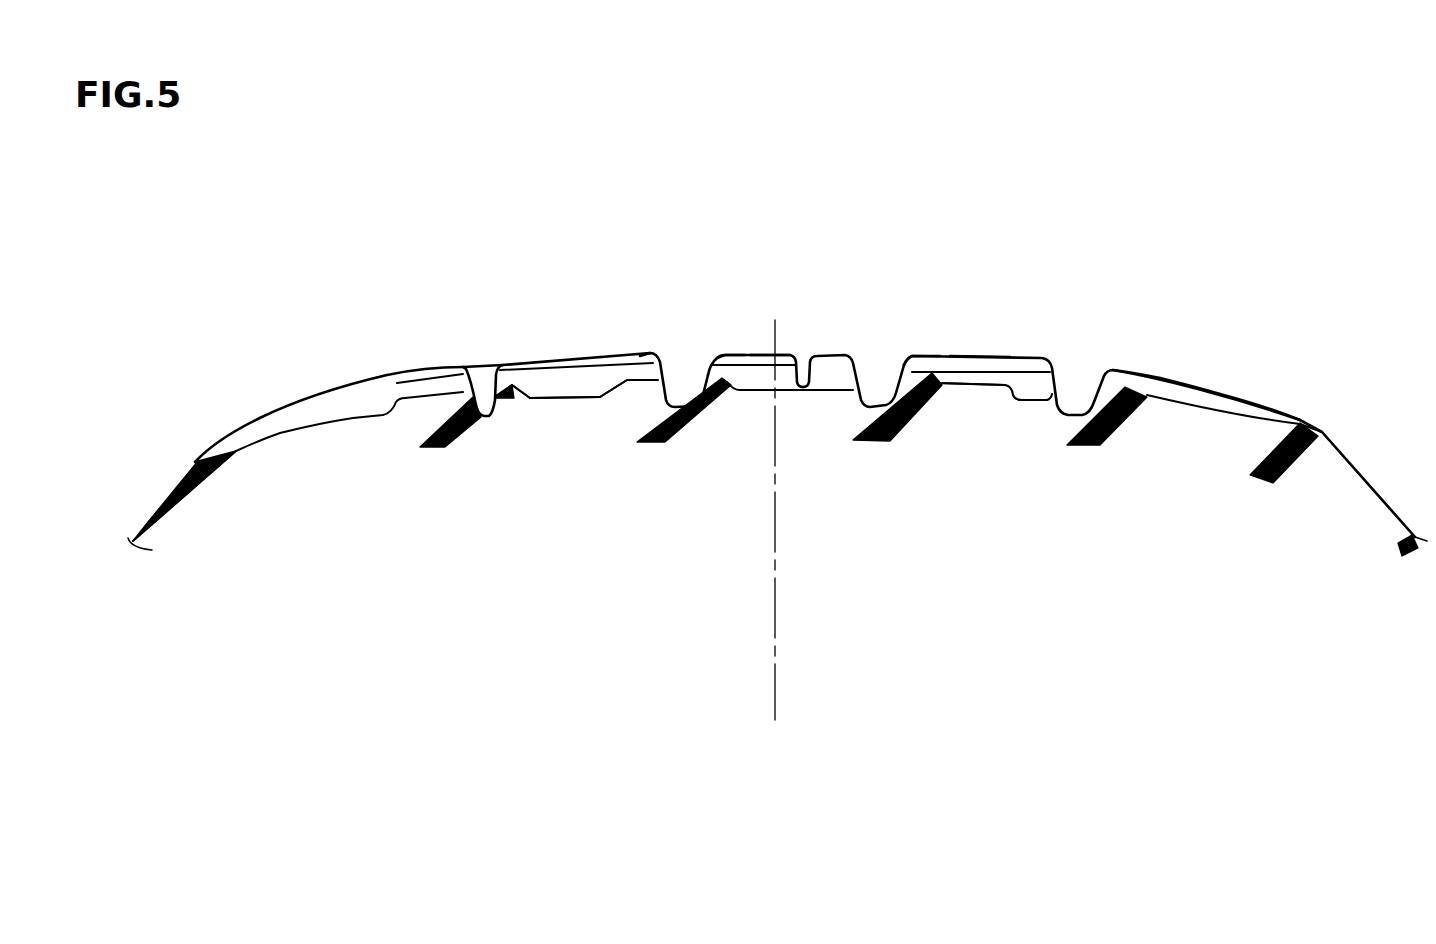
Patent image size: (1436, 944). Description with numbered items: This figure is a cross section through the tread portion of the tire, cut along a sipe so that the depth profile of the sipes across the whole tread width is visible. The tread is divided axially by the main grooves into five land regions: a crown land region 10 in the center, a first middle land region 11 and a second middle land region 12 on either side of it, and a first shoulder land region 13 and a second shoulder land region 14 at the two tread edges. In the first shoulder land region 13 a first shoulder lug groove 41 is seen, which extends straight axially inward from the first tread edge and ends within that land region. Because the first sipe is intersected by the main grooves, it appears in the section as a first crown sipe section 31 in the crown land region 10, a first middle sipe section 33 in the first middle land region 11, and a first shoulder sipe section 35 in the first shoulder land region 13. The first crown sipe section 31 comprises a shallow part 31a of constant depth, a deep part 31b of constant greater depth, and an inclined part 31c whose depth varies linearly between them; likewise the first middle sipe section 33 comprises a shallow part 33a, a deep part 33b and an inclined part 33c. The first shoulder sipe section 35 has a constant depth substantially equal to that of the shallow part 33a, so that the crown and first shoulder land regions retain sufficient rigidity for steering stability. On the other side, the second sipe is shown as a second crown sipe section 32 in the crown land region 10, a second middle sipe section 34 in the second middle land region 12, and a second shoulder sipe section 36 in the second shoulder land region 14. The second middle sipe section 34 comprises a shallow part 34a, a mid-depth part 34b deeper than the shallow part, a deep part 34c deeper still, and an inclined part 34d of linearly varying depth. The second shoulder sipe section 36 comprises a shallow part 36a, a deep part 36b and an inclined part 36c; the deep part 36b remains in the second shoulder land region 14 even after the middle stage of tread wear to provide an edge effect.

The crown land region 10 is at (759, 416).
The first middle land region 11 is at (578, 411).
The second middle land region 12 is at (982, 407).
The first shoulder land region 13 is at (347, 447).
The second shoulder land region 14 is at (1205, 431).
The first crown sipe section 31 is at (823, 200).
The shallow part 31a is at (713, 372).
The deep part 31b is at (760, 378).
The inclined part 31c is at (735, 377).
The second crown sipe section 32 is at (828, 375).
The first middle sipe section 33 is at (670, 273).
The shallow part 33a is at (425, 372).
The deep part 33b is at (567, 390).
The inclined part 33c is at (500, 380).
The second middle sipe section 34 is at (1175, 232).
The shallow part 34a is at (910, 358).
The mid-depth part 34b is at (977, 375).
The deep part 34c is at (1037, 385).
The inclined part 34d is at (940, 375).
The first shoulder sipe section 35 is at (428, 385).
The second shoulder sipe section 36 is at (1370, 290).
The shallow part 36a is at (1127, 376).
The deep part 36b is at (1213, 400).
The inclined part 36c is at (1165, 390).
The first shoulder lug groove 41 is at (307, 415).